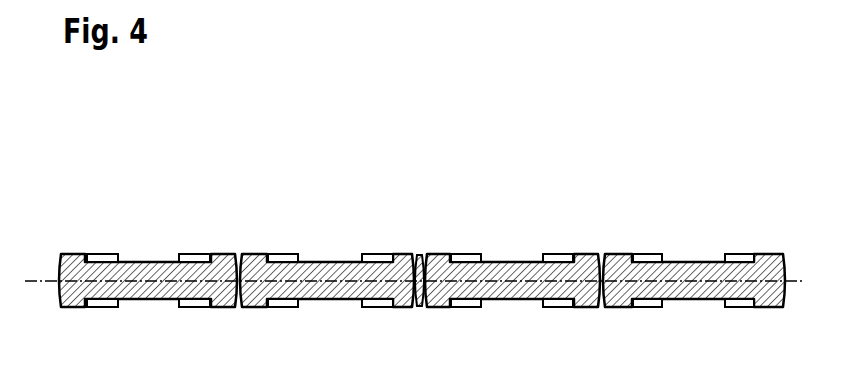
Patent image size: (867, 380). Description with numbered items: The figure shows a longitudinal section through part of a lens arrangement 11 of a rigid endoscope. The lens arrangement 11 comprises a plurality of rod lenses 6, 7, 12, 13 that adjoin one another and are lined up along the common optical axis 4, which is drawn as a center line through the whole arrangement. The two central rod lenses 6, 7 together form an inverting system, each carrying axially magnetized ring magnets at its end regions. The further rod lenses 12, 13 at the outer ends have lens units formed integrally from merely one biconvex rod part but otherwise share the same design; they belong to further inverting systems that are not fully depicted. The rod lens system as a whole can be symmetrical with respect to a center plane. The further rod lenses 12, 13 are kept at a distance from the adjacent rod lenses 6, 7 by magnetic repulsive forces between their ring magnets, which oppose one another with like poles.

The optical axis 4 is at (50, 283).
The lens arrangement 11 is at (383, 115).
The rod lens 12 is at (153, 225).
The rod lens 6 is at (337, 225).
The rod lens 7 is at (518, 225).
The rod lens 13 is at (700, 225).